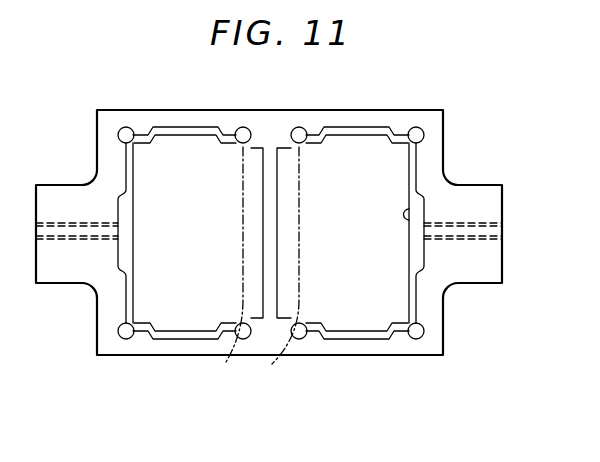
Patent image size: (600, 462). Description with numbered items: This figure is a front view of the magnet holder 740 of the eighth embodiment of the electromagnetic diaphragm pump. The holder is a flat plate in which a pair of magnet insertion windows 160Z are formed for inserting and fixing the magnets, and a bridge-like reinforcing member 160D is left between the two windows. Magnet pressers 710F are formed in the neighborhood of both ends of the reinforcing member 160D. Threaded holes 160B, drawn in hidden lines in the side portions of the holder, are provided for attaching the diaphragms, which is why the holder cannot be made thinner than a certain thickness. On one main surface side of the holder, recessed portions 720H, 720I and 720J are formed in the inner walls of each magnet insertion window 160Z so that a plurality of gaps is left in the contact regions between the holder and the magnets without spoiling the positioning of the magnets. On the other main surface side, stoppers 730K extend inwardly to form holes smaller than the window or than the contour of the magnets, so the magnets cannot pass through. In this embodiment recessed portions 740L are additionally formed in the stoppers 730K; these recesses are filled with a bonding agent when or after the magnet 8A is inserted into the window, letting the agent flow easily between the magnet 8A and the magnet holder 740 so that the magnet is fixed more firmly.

The magnet holder 740 is at (396, 110).
The recessed portions 740L is at (412, 213).
The recessed portion 720H is at (180, 127).
The recessed portion 720J is at (128, 136).
The recessed portion 720I is at (122, 192).
The magnet insertion windows 160Z is at (147, 329).
The threaded holes 160B is at (67, 240).
The stoppers 730K is at (396, 150).
The magnet pressers 710F is at (256, 143).
The magnet 8A is at (278, 356).
The reinforcing member 160D is at (270, 278).